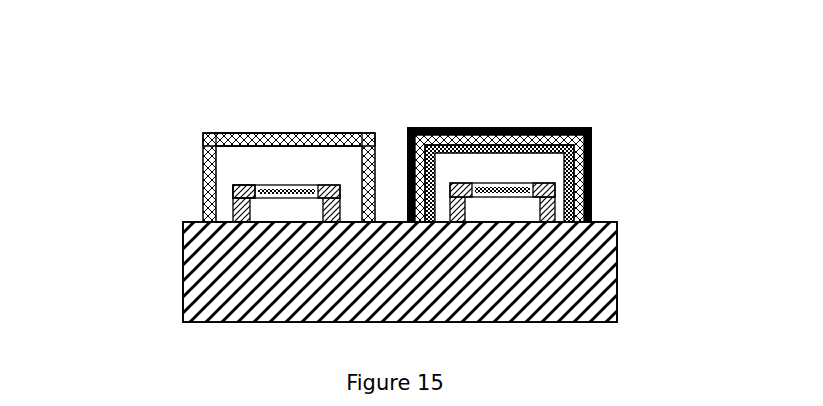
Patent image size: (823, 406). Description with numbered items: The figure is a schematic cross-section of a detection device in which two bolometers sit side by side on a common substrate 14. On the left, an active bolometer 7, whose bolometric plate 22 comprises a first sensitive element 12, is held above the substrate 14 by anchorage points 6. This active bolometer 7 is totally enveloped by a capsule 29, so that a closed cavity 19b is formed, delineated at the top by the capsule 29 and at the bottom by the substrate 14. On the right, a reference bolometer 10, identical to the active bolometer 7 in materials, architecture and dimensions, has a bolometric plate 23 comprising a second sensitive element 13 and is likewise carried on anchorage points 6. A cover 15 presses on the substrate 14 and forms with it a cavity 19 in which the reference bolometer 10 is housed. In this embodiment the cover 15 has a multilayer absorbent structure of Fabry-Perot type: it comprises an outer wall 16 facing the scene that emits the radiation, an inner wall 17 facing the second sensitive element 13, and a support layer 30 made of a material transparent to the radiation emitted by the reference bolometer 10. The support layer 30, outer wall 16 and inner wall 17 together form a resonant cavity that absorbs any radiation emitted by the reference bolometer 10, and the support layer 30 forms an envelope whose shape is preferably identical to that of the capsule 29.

The anchorage points 6 is at (205, 213).
The active bolometer 7 is at (302, 152).
The reference bolometer 10 is at (540, 152).
The first sensitive element 12 is at (285, 185).
The second sensitive element 13 is at (492, 182).
The substrate 14 is at (585, 273).
The cover 15 is at (606, 143).
The outer wall 16 is at (595, 188).
The inner wall 17 is at (480, 127).
The cavity 19 is at (502, 162).
The closed cavity 19b is at (343, 140).
The bolometric plate 22 is at (245, 187).
The bolometric plate 23 is at (595, 207).
The capsule 29 is at (256, 133).
The support layer 30 is at (430, 127).